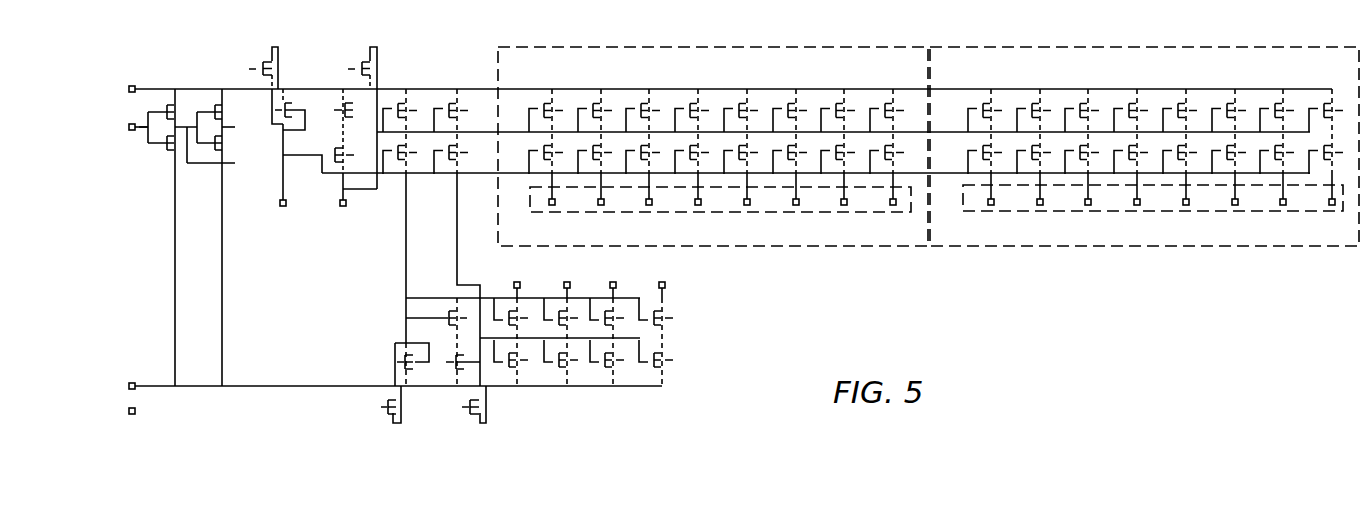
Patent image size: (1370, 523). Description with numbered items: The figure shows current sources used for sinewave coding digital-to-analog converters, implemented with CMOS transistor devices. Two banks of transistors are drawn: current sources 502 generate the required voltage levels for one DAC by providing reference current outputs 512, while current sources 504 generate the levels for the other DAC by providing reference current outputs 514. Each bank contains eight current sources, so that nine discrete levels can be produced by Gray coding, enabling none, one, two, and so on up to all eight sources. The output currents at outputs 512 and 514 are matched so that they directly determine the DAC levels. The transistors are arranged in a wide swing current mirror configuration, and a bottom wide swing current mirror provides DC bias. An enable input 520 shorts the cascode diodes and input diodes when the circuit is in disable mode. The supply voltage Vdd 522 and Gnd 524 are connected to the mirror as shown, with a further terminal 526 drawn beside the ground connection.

The current sources 502 is at (1144, 167).
The current sources 504 is at (713, 167).
The reference current outputs 512 is at (1203, 213).
The reference current outputs 514 is at (797, 213).
The enable input 520 is at (129, 126).
The supply voltage Vdd 522 is at (129, 89).
The Gnd 524 is at (129, 385).
The terminal 526 is at (129, 410).